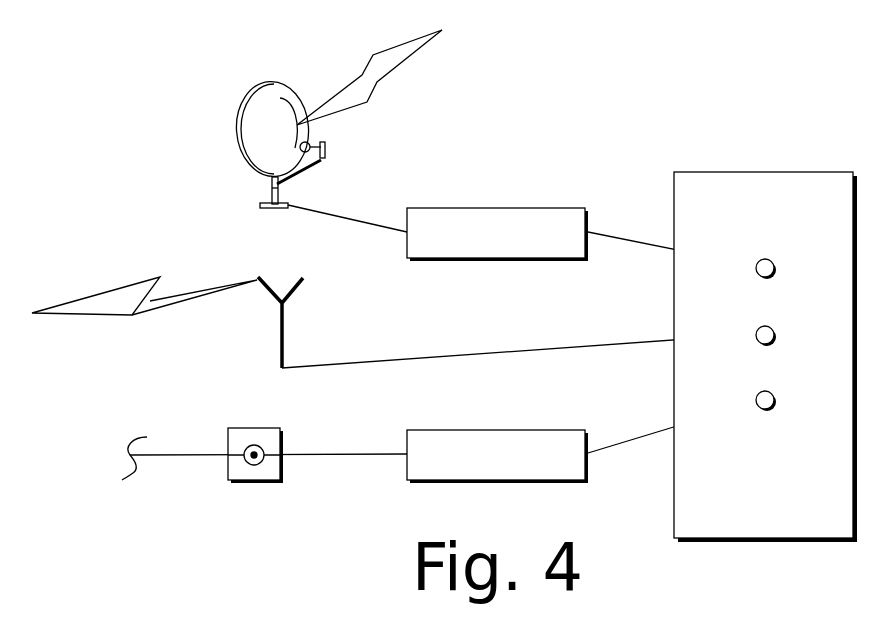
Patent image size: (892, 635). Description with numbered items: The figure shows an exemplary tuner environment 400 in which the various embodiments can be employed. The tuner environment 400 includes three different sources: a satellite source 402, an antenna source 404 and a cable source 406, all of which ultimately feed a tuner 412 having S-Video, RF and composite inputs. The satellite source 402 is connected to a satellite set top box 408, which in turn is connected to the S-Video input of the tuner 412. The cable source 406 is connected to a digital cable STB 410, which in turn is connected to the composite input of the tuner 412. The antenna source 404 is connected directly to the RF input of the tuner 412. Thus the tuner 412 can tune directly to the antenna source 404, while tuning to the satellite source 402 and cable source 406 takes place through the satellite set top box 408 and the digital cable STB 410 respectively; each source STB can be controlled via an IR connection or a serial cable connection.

The tuner environment 400 is at (493, 85).
The satellite source 402 is at (257, 83).
The antenna source 404 is at (284, 327).
The cable source 406 is at (228, 428).
The satellite set top box 408 is at (497, 208).
The digital cable STB 410 is at (497, 430).
The tuner 412 is at (765, 172).